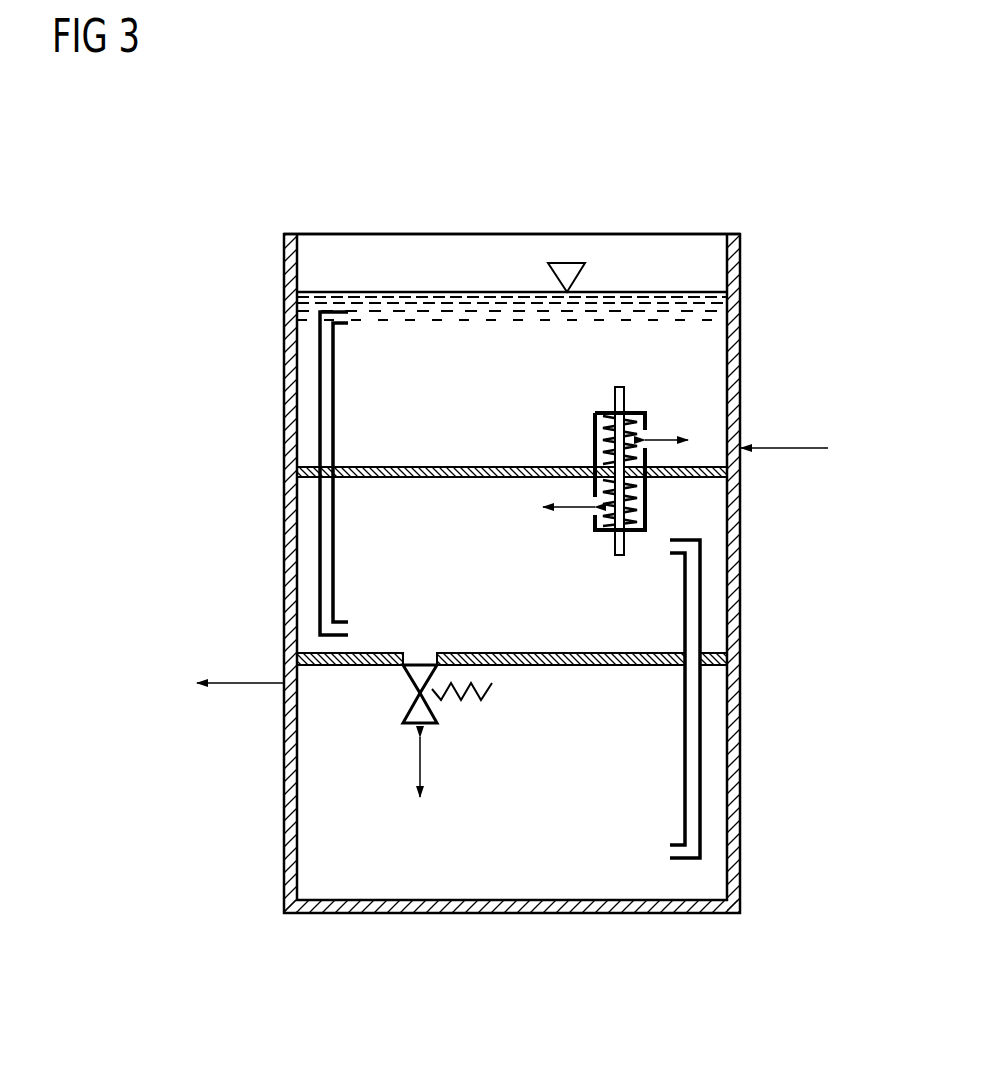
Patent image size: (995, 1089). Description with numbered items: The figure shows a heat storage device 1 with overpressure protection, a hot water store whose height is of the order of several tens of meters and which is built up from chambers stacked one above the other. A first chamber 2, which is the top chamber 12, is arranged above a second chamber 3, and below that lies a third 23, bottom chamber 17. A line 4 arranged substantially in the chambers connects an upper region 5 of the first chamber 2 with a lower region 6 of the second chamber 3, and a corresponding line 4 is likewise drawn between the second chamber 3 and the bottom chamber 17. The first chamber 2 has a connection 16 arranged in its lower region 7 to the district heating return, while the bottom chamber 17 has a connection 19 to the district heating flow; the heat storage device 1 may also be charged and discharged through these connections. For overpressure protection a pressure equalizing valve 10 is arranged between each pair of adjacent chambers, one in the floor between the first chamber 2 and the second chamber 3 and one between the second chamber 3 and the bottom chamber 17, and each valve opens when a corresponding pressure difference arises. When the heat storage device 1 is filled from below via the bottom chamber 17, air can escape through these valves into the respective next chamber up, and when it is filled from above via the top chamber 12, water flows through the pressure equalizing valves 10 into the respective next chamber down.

The heat storage device 1 is at (262, 120).
The first chamber 2 is at (708, 345).
The top chamber 12 is at (562, 297).
The second chamber 3 is at (708, 507).
The line 4 is at (327, 545).
The upper region 5 is at (308, 310).
The lower region 6 is at (308, 632).
The lower region 7 is at (308, 442).
The pressure equalizing valve 10 is at (594, 405).
The connection 16 is at (785, 447).
The bottom chamber 17 is at (310, 876).
The third chamber 23 is at (451, 783).
The connection 19 is at (238, 683).